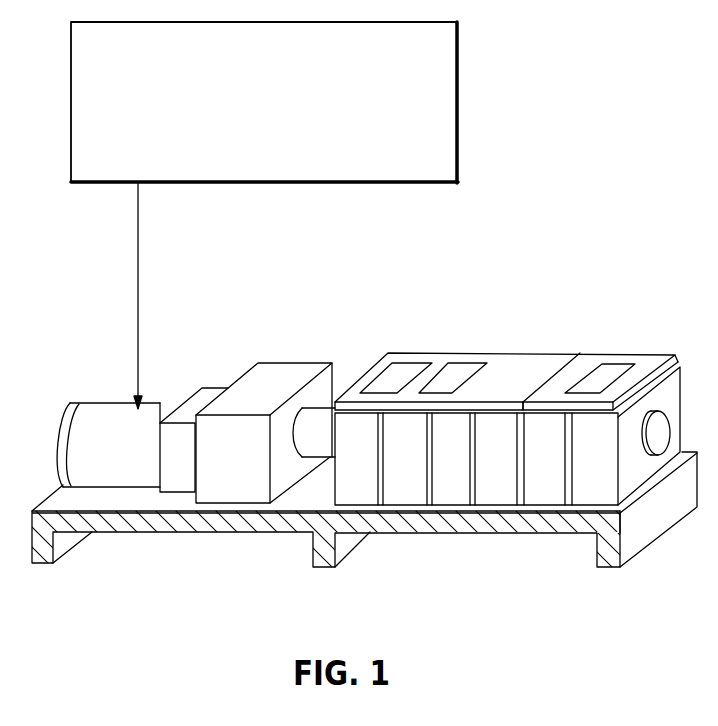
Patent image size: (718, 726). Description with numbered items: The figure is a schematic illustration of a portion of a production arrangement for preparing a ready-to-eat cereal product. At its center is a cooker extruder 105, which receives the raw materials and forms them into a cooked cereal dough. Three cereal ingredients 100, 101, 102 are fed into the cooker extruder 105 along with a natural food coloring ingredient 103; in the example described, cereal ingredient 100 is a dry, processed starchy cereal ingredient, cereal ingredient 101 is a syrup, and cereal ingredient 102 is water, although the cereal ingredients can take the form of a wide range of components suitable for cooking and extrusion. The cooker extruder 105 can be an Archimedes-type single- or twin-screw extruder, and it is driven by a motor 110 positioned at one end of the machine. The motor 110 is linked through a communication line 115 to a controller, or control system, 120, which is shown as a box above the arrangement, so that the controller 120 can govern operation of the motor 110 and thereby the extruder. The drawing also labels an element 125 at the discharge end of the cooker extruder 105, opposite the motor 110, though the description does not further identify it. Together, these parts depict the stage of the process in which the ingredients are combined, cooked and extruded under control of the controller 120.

The cereal ingredient 100 is at (317, 397).
The cereal ingredient 101 is at (403, 364).
The cereal ingredient 102 is at (461, 364).
The natural food coloring ingredient 103 is at (613, 364).
The cooker extruder 105 is at (410, 482).
The motor 110 is at (115, 460).
The communication line 115 is at (138, 280).
The controller 120 is at (457, 96).
The extruder outlet / die 125 is at (643, 439).